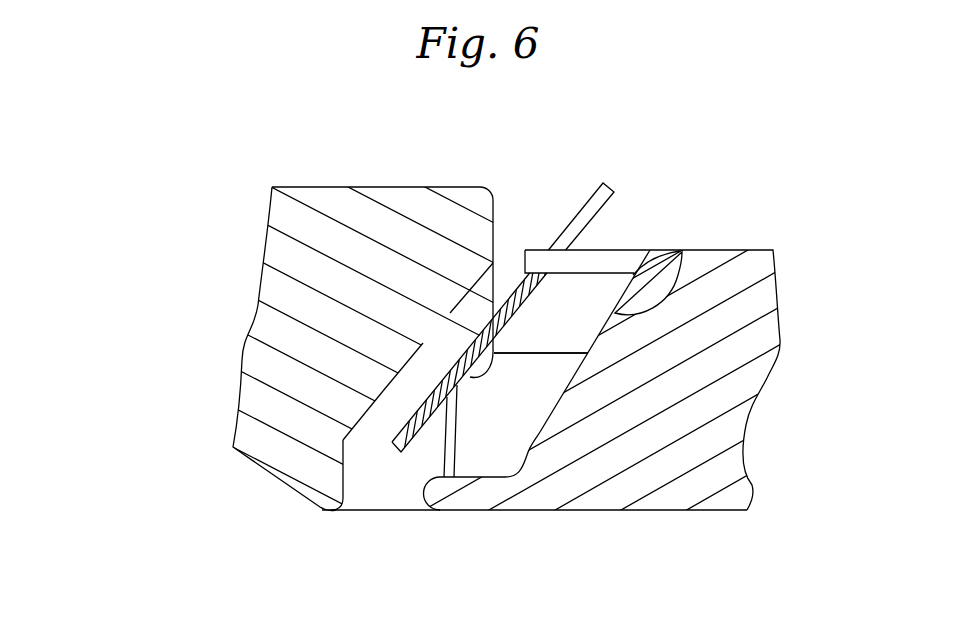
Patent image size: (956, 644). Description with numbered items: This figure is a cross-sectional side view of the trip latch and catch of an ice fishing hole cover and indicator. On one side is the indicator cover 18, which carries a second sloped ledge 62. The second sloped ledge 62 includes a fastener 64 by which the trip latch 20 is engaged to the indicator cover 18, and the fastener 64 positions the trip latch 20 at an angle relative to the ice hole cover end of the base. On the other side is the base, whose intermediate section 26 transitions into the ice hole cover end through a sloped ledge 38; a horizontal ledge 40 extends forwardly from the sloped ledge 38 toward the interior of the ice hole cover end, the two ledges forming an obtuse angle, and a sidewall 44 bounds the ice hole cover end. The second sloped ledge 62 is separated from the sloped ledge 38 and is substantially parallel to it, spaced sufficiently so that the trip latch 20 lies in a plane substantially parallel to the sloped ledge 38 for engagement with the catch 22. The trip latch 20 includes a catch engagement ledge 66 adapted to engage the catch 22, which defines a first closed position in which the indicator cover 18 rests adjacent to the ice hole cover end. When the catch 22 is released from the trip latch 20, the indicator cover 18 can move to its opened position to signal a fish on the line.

The indicator cover 18 is at (262, 263).
The trip latch 20 is at (578, 213).
The catch 22 is at (625, 253).
The intermediate section 26 is at (751, 305).
The sloped ledge 38 is at (690, 272).
The horizontal ledge 40 is at (523, 472).
The sidewall 44 is at (530, 405).
The second sloped ledge 62 is at (372, 421).
The fastener 64 is at (398, 375).
The catch engagement ledge 66 is at (493, 320).